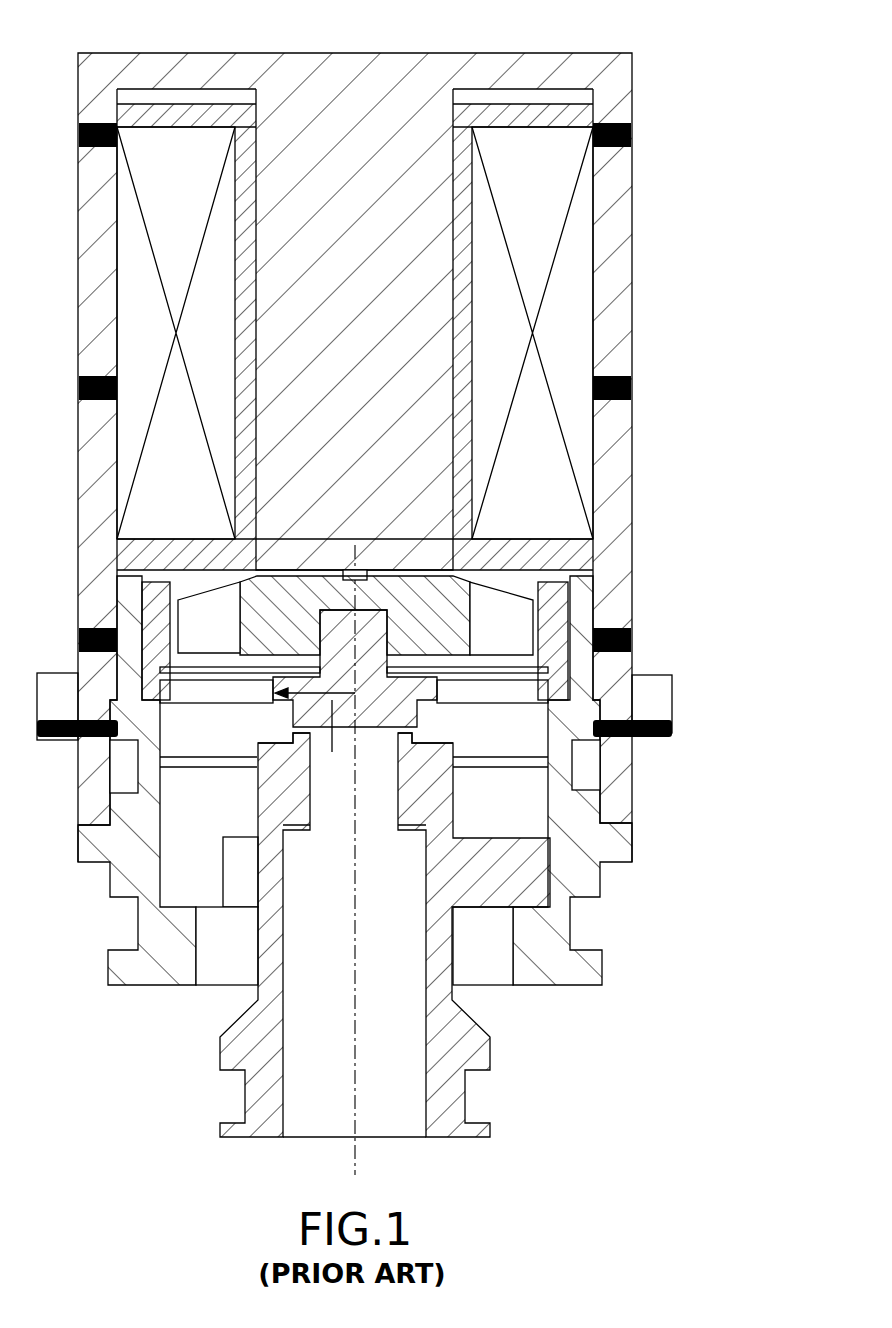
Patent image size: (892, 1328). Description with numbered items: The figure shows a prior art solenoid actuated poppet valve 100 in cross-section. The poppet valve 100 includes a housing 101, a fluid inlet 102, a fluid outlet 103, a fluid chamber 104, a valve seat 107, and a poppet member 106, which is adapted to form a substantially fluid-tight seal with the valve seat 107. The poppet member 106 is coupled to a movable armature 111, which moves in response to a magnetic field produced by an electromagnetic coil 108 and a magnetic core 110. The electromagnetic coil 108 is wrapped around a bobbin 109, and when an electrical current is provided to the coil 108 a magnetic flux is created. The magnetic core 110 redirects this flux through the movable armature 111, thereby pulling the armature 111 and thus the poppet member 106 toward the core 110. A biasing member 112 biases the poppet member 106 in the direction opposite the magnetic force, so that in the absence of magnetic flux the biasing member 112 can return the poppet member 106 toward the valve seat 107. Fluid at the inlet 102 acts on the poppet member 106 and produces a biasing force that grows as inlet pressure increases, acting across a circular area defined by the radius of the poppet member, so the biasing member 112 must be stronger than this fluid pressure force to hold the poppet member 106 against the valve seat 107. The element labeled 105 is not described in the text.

The solenoid actuated poppet valve 100 is at (655, 53).
The housing 101 is at (625, 605).
The fluid inlet 102 is at (398, 1127).
The fluid outlet 103 is at (212, 978).
The fluid chamber 104 is at (413, 1019).
The valve chamber 105 is at (537, 727).
The poppet member 106 is at (427, 706).
The valve seat 107 is at (303, 740).
The electromagnetic coil 108 is at (578, 333).
The bobbin 109 is at (578, 118).
The magnetic core 110 is at (265, 233).
The movable armature 111 is at (260, 617).
The biasing member 112 is at (497, 668).